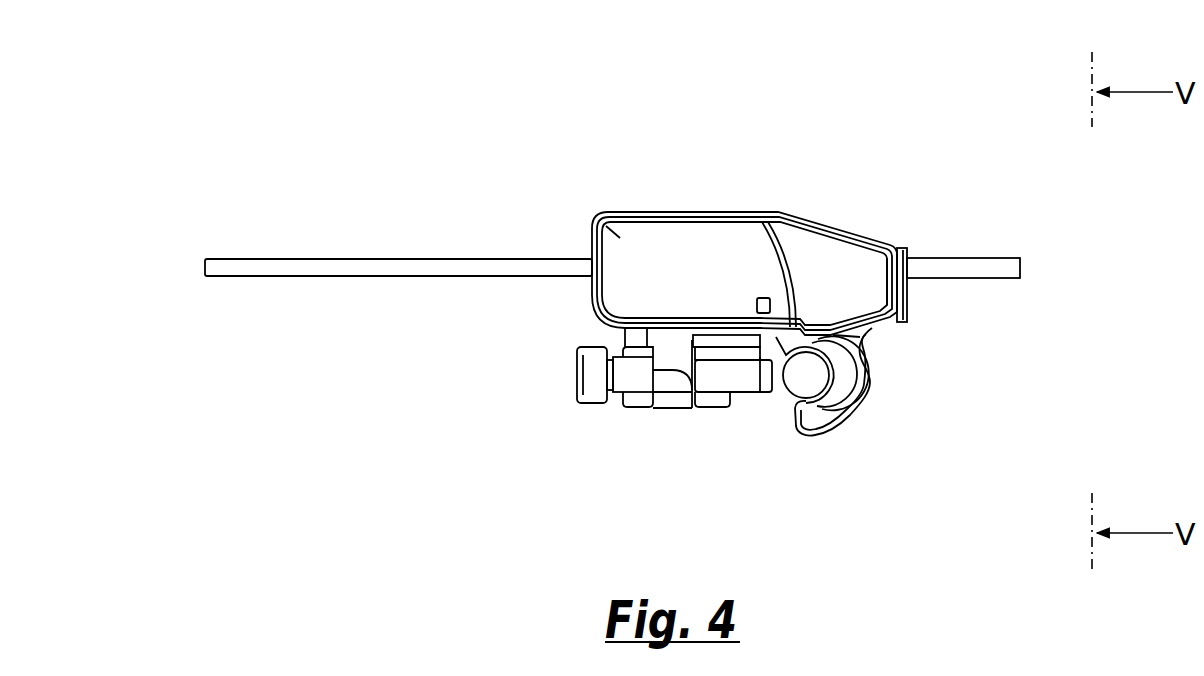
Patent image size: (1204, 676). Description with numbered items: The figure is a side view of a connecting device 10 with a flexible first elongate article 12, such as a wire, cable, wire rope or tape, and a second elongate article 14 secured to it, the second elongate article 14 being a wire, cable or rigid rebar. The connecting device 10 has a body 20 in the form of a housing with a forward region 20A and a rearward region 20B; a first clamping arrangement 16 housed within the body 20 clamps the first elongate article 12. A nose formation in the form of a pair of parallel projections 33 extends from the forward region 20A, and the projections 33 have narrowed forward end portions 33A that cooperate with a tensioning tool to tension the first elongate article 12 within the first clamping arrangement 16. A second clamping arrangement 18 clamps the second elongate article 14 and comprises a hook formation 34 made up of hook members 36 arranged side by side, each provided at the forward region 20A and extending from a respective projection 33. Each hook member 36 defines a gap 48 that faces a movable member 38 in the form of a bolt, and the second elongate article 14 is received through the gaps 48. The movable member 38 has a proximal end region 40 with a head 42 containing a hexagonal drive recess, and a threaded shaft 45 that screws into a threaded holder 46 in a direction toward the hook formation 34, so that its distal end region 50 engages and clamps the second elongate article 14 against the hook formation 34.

The connecting device 10 is at (657, 171).
The first elongate article 12 is at (296, 265).
The second elongate article 14 is at (788, 400).
The first clamping arrangement 16 is at (893, 238).
The second clamping arrangement 18 is at (643, 420).
The body 20 is at (690, 275).
The forward region 20A is at (750, 237).
The rearward region 20B is at (600, 218).
The projections 33 is at (848, 305).
The narrowed forward end portions 33A is at (908, 293).
The hook formation 34 is at (831, 441).
The hook members 36 is at (850, 397).
The movable member 38 is at (744, 390).
The proximal end region 40 is at (589, 344).
The head 42 is at (590, 385).
The threaded shaft 45 is at (717, 365).
The holder 46 is at (672, 405).
The gap 48 is at (797, 400).
The distal end region 50 is at (757, 367).